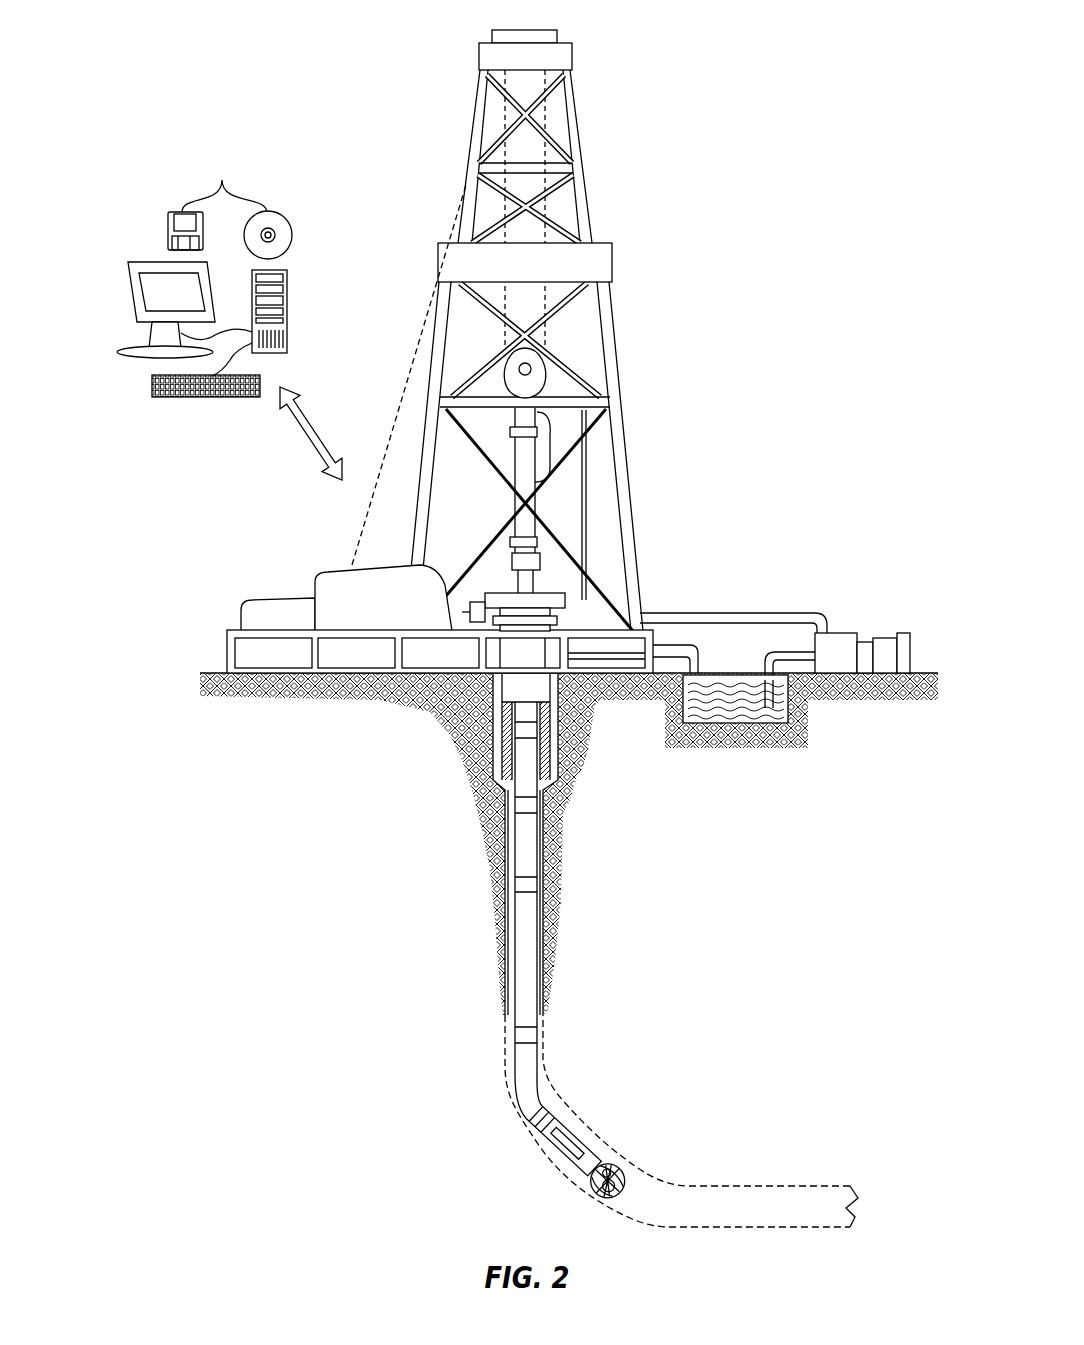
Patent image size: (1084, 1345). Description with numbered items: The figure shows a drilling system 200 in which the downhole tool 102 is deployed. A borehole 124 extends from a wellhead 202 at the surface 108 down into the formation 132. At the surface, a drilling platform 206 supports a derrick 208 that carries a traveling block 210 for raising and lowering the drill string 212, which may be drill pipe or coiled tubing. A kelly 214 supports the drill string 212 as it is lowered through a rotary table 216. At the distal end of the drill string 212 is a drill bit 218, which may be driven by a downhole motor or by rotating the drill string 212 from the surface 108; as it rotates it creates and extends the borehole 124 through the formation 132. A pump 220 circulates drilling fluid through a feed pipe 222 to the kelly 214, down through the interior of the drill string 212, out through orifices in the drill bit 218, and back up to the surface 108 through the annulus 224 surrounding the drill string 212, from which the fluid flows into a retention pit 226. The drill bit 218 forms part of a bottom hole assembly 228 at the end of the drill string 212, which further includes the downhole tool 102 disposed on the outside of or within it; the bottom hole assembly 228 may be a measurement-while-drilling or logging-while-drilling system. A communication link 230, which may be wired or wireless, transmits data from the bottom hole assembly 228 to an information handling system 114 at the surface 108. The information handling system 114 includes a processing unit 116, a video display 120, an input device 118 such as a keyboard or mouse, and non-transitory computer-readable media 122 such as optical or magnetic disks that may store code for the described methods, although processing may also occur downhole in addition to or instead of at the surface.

The drilling system 200 is at (845, 130).
The information handling system 114 is at (201, 309).
The processing unit 116 is at (290, 283).
The input device 118 is at (162, 398).
The video display 120 is at (132, 300).
The non-transitory computer-readable media 122 is at (230, 203).
The communication link 230 is at (296, 440).
The derrick 208 is at (593, 185).
The traveling block 210 is at (545, 372).
The kelly 214 is at (525, 455).
The rotary table 216 is at (582, 567).
The wellhead 202 is at (575, 618).
The drilling platform 206 is at (228, 655).
The feed pipe 222 is at (765, 612).
The pump 220 is at (843, 632).
The surface 108 is at (920, 672).
The retention pit 226 is at (731, 705).
The drill string 212 is at (535, 862).
The annulus 224 is at (505, 878).
The borehole 124 is at (540, 878).
The formation 132 is at (730, 969).
The bottom hole assembly 228 is at (528, 1140).
The downhole tool 102 is at (581, 1135).
The drill bit 218 is at (627, 1168).